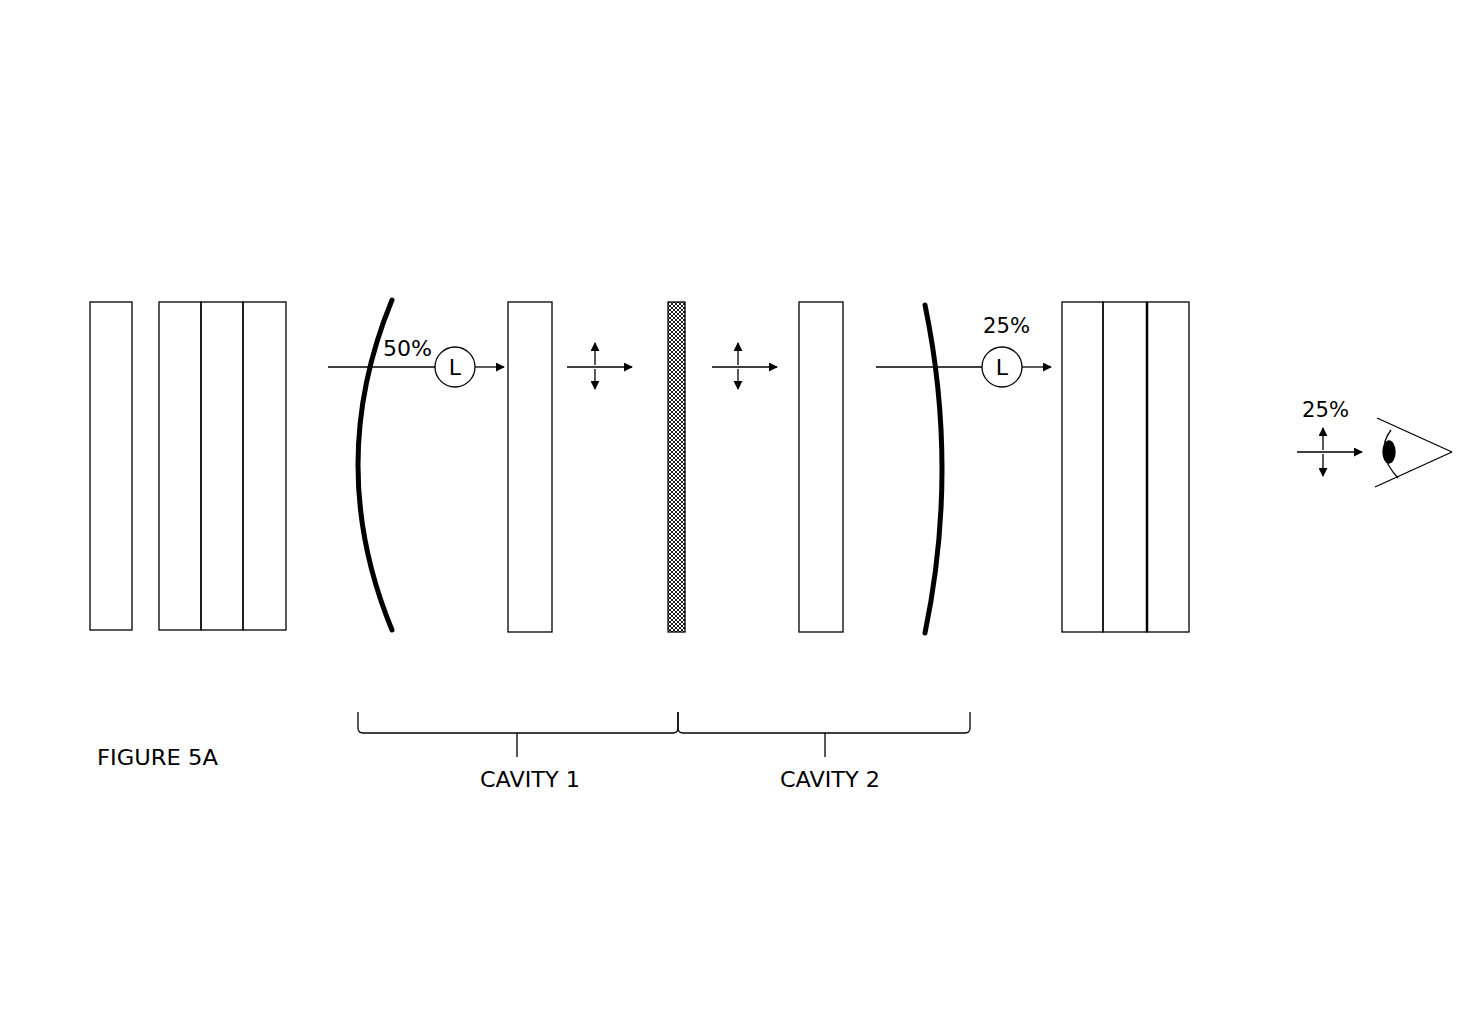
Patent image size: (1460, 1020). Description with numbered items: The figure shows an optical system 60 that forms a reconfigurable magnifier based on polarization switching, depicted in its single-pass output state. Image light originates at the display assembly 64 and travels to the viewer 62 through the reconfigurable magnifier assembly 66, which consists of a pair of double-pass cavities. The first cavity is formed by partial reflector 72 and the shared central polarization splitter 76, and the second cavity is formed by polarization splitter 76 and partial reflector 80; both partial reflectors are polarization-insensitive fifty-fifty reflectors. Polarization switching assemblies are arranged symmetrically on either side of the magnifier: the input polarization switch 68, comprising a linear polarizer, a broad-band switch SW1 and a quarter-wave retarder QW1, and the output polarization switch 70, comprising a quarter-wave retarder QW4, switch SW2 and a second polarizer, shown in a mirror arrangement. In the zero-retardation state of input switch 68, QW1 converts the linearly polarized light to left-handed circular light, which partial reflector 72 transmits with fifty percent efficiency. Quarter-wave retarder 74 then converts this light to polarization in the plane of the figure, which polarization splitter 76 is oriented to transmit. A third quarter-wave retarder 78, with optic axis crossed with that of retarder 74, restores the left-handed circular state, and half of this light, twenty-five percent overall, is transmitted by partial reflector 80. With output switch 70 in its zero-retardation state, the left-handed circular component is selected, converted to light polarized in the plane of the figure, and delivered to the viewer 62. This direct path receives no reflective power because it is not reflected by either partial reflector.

The optical system 60 is at (134, 119).
The viewer 62 is at (1418, 435).
The display assembly 64 is at (118, 302).
The reconfigurable magnifier assembly 66 is at (651, 142).
The input polarization switch 68 is at (222, 302).
The output polarization switch 70 is at (1120, 302).
The partial reflector 72 is at (392, 300).
The quarter-wave retarder 74 is at (530, 302).
The polarization splitter 76 is at (676, 302).
The third quarter-wave retarder 78 is at (820, 302).
The partial reflector 80 is at (925, 303).